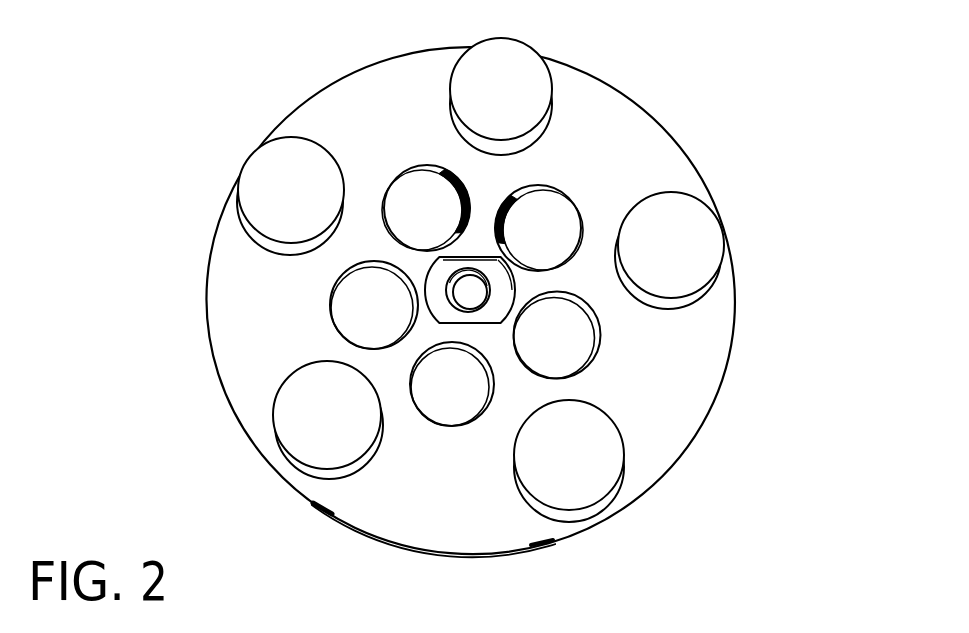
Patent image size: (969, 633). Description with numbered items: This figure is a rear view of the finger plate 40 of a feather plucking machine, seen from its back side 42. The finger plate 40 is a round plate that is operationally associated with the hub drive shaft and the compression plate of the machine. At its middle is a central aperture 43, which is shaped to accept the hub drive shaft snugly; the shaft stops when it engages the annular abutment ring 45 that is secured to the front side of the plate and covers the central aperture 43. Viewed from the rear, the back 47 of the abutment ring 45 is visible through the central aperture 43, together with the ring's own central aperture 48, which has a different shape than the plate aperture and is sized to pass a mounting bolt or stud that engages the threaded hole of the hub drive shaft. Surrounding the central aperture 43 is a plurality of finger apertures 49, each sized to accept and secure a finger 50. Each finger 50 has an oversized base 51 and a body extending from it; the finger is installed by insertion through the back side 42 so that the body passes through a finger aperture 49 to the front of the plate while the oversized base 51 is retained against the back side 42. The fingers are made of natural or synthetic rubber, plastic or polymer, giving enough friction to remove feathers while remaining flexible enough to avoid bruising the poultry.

The finger plate 40 is at (585, 108).
The back side 42 is at (685, 358).
The central aperture 43 is at (447, 268).
The annular abutment ring 45 is at (500, 297).
The back 47 is at (443, 303).
The central aperture 48 is at (473, 292).
The finger apertures 49 is at (415, 182).
The finger 50 is at (322, 443).
The oversized base 51 is at (273, 170).